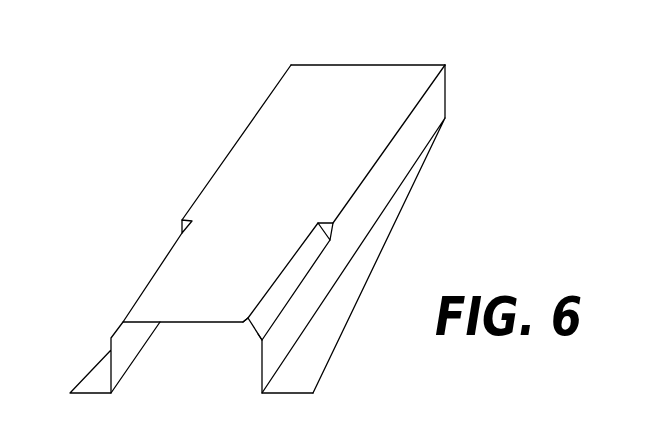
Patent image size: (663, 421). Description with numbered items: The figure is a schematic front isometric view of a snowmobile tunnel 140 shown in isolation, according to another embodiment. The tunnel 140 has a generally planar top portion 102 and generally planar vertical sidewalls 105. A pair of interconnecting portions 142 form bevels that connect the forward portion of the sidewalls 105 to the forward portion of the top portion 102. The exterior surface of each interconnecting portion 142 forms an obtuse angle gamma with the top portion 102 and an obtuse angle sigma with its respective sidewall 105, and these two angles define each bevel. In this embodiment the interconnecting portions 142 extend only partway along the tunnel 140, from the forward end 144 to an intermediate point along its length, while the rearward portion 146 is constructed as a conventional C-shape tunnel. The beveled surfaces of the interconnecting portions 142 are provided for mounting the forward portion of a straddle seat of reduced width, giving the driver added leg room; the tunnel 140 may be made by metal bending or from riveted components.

The tunnel 140 is at (201, 109).
The top portion 102 is at (366, 75).
The rearward portion 146 is at (359, 122).
The forward end 144 is at (233, 300).
The interconnecting portions 142 is at (122, 322).
The sidewalls 105 is at (373, 198).